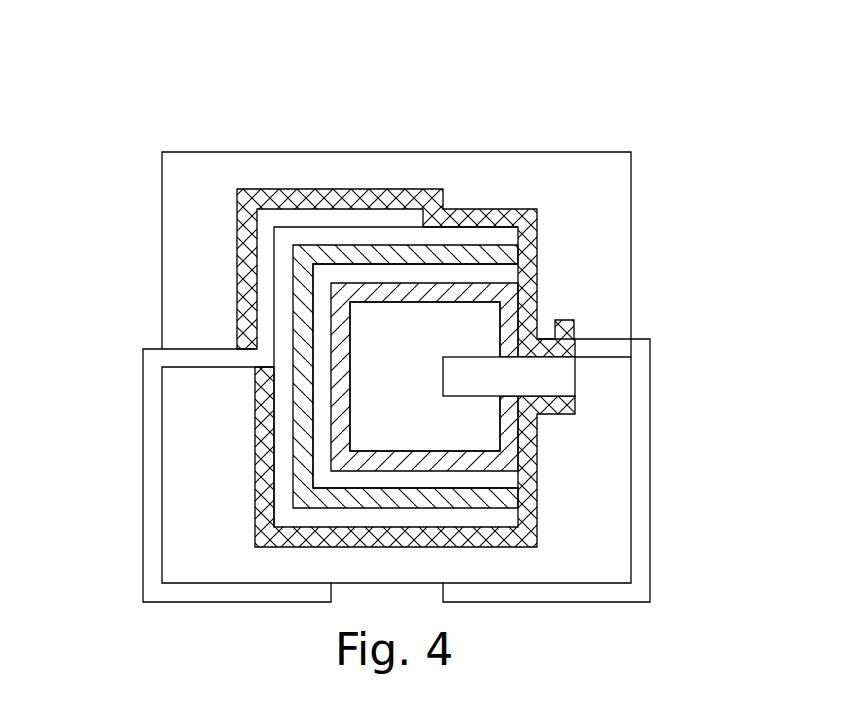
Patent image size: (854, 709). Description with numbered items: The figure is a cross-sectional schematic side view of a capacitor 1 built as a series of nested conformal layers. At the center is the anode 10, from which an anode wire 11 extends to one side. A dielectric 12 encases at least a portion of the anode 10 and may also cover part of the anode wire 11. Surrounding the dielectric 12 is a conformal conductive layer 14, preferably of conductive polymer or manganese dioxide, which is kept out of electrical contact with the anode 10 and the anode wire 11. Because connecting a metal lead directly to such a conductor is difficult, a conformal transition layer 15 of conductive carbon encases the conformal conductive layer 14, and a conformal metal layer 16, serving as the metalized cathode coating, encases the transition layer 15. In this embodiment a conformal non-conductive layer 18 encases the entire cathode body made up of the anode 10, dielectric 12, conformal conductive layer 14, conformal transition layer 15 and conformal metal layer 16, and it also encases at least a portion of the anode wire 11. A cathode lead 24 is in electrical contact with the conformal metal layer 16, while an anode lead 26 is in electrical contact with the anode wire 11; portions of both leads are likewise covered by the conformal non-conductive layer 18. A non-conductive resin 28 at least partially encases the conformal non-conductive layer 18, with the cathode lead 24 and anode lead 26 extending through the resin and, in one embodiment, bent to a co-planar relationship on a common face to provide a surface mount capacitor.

The capacitor 1 is at (118, 364).
The anode 10 is at (472, 320).
The anode wire 11 is at (553, 380).
The dielectric 12 is at (457, 293).
The conformal conductive layer 14 is at (423, 272).
The conformal transition layer 15 is at (375, 260).
The conformal metal layer 16 is at (312, 237).
The conformal non-conductive layer 18 is at (240, 239).
The cathode lead 24 is at (153, 578).
The anode lead 26 is at (638, 530).
The non-conductive resin 28 is at (598, 562).